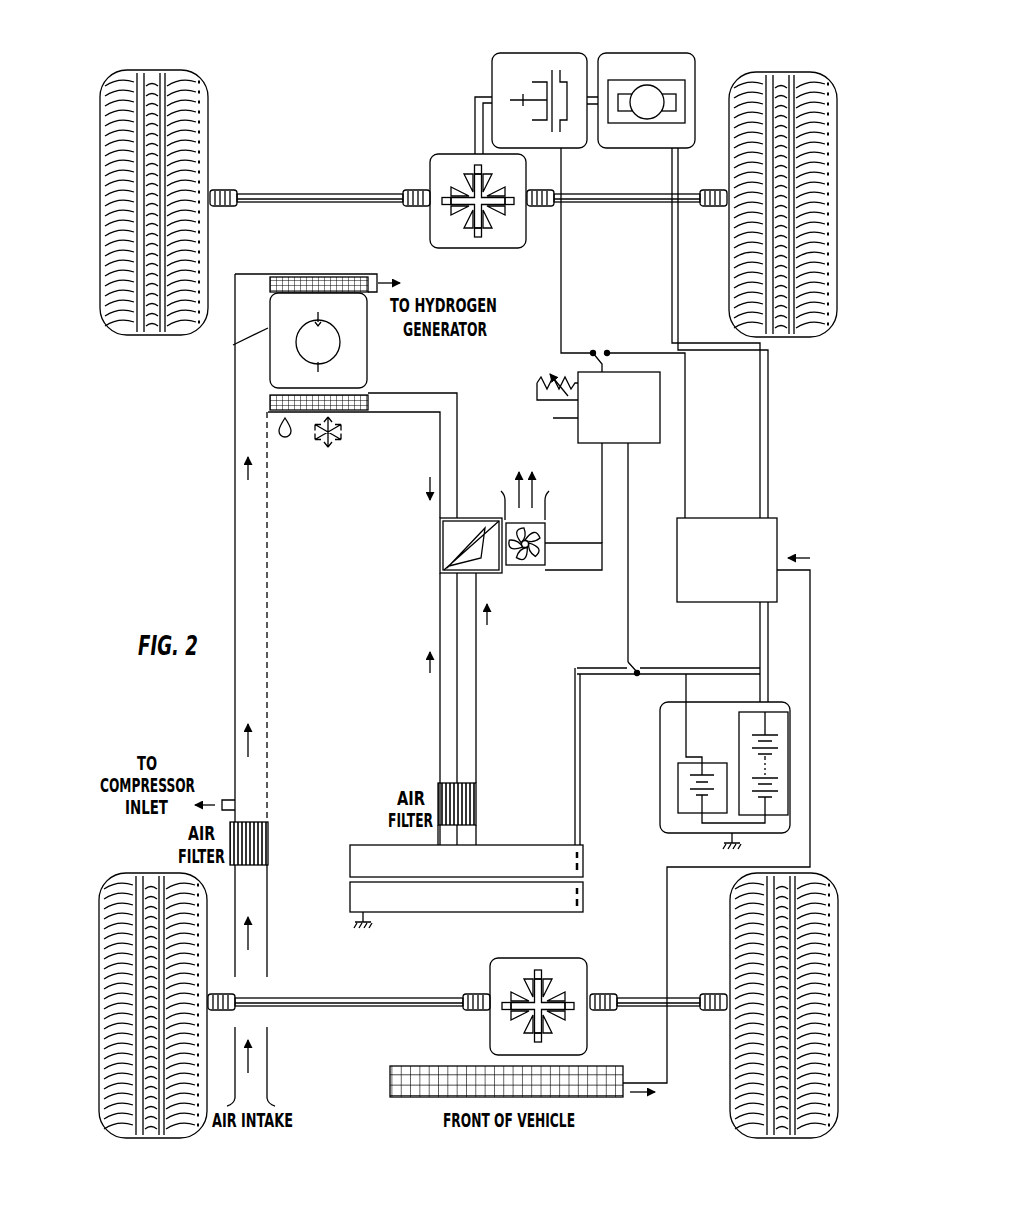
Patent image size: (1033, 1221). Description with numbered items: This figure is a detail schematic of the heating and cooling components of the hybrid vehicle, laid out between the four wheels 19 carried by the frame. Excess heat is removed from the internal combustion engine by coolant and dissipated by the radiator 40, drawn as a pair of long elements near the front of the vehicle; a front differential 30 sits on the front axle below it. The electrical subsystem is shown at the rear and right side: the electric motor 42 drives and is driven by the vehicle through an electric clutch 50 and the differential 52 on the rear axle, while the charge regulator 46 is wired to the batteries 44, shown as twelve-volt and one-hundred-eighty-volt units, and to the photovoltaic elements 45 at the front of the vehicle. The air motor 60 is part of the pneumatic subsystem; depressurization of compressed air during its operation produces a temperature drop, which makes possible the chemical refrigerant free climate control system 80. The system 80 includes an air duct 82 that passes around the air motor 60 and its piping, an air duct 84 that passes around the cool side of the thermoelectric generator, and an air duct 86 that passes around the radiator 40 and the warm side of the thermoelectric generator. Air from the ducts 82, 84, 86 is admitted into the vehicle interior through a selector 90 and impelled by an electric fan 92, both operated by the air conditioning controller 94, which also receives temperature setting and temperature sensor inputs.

The wheels 19 is at (193, 103).
The front differential 30 is at (498, 1015).
The radiator 40 is at (352, 858).
The electric motor 42 is at (656, 53).
The batteries 44 is at (790, 745).
The photovoltaic elements 45 is at (392, 1070).
The charge regulator 46 is at (710, 530).
The electric clutch 50 is at (521, 53).
The differential 52 is at (446, 154).
The air motor 60 is at (342, 342).
The climate control system 80 is at (178, 526).
The air duct 82 is at (262, 620).
The air duct 84 is at (440, 616).
The air duct 86 is at (472, 702).
The selector 90 is at (443, 540).
The electric fan 92 is at (538, 565).
The air conditioning controller 94 is at (648, 437).